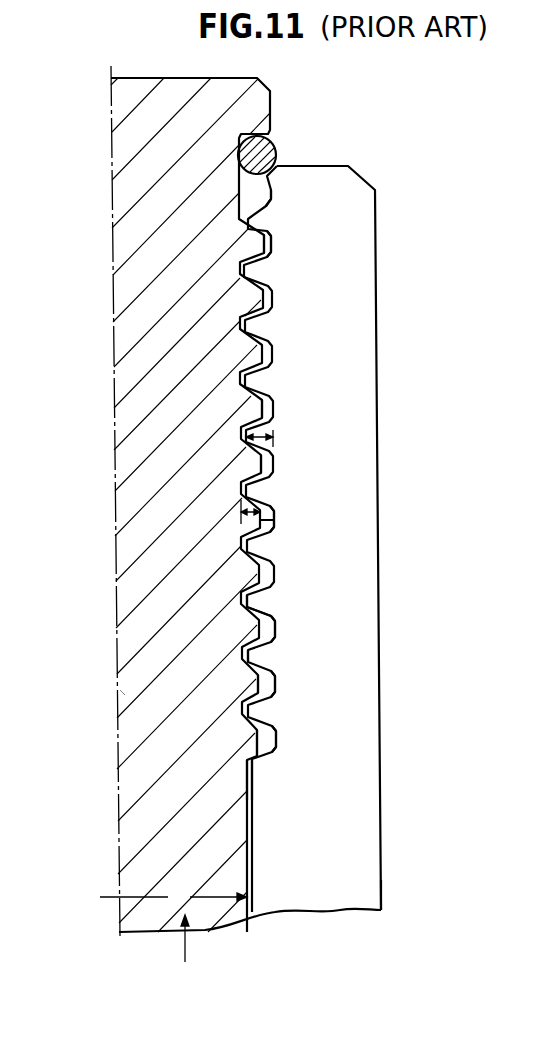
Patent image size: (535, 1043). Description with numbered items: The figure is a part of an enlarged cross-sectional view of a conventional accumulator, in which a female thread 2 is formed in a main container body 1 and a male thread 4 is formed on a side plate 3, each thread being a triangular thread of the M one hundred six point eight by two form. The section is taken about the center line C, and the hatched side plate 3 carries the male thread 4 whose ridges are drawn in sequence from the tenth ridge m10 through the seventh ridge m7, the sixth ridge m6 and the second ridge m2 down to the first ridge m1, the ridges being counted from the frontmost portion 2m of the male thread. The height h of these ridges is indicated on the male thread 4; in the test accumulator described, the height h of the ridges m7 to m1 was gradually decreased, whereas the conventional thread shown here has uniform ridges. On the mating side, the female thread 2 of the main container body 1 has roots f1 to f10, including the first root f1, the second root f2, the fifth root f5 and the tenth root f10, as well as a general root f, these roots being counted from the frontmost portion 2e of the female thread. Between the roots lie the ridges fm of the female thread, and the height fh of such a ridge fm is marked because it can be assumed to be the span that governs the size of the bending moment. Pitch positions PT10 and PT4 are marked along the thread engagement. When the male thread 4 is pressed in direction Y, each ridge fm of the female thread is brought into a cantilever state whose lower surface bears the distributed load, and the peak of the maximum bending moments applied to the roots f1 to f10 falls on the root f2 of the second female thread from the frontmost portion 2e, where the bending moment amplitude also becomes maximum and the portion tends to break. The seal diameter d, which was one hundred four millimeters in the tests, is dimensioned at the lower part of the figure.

The center axis C is at (111, 74).
The main container body 1 is at (381, 887).
The female thread 2 is at (373, 616).
The frontmost portion 2e is at (253, 770).
The frontmost portion 2m is at (246, 759).
The side plate 3 is at (118, 256).
The male thread 4 is at (126, 692).
The tenth pitch point of thread PT10 is at (263, 233).
The fourth pitch point of thread PT4 is at (268, 613).
The ridge m10 is at (263, 243).
The ridge m7 is at (261, 409).
The ridge m6 is at (252, 456).
The ridge m2 is at (258, 684).
The ridge m1 is at (257, 738).
The root f10 is at (273, 245).
The root f5 is at (275, 520).
The root f2 is at (276, 685).
The root f1 is at (277, 738).
The root f is at (277, 628).
The ridge of the female thread fm is at (251, 656).
The height of the ridge fh is at (274, 437).
The height of ridges h is at (241, 512).
The seal diameter d is at (173, 896).
The direction Y is at (188, 949).